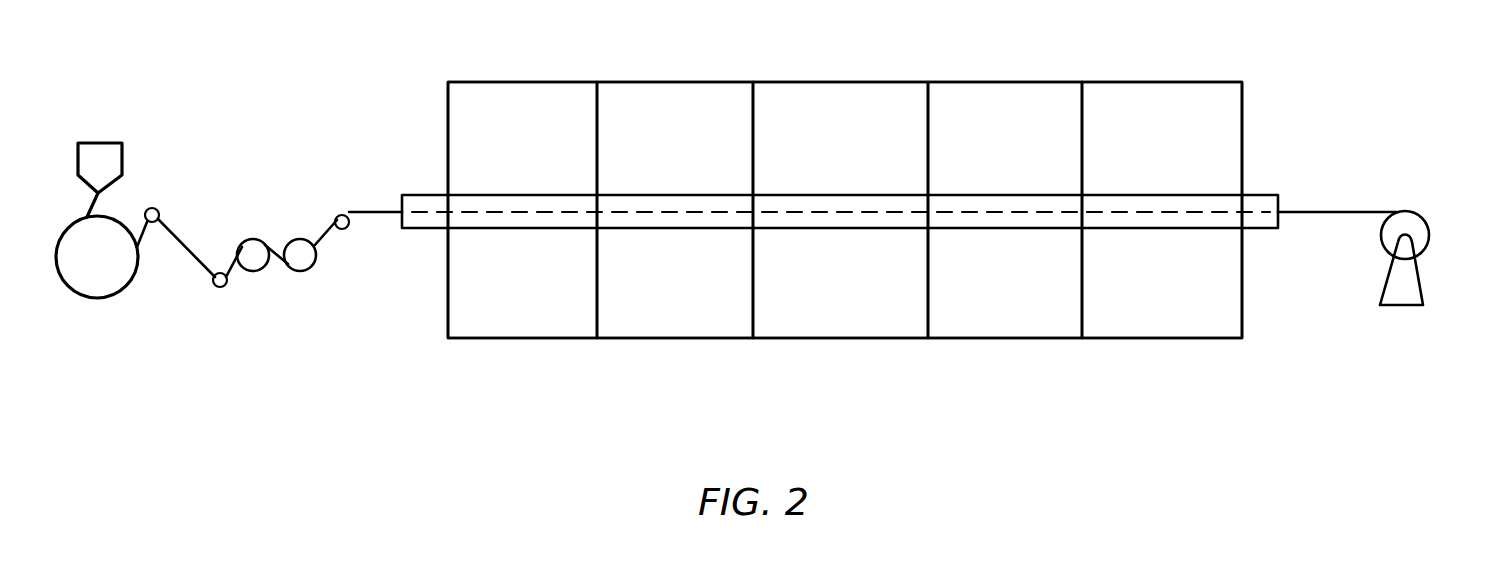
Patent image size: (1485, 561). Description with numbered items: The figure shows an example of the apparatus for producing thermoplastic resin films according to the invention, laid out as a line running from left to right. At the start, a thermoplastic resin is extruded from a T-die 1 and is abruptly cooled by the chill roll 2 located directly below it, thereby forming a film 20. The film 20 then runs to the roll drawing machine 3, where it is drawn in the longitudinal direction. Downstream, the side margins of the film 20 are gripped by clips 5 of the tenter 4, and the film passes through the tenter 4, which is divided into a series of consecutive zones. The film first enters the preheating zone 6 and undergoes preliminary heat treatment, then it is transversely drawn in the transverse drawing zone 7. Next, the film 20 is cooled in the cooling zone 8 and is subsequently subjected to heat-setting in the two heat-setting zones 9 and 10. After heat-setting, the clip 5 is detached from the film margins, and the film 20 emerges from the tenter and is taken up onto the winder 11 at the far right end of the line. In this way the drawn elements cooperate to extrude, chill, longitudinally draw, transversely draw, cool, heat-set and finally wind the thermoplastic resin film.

The T-die 1 is at (100, 143).
The chill roll 2 is at (95, 299).
The roll drawing machine 3 is at (298, 240).
The tenter 4 is at (527, 82).
The clips 5 is at (420, 230).
The preheating zone 6 is at (537, 340).
The transverse drawing zone 7 is at (695, 340).
The cooling zone 8 is at (855, 340).
The heat-setting zone 9 is at (1013, 340).
The heat-setting zone 10 is at (1175, 340).
The winder 11 is at (1405, 308).
The film 20 is at (368, 210).